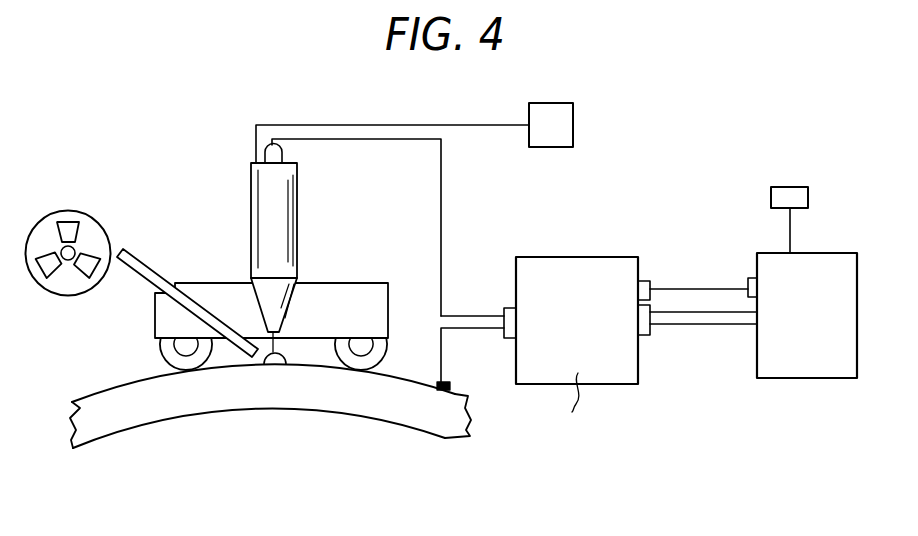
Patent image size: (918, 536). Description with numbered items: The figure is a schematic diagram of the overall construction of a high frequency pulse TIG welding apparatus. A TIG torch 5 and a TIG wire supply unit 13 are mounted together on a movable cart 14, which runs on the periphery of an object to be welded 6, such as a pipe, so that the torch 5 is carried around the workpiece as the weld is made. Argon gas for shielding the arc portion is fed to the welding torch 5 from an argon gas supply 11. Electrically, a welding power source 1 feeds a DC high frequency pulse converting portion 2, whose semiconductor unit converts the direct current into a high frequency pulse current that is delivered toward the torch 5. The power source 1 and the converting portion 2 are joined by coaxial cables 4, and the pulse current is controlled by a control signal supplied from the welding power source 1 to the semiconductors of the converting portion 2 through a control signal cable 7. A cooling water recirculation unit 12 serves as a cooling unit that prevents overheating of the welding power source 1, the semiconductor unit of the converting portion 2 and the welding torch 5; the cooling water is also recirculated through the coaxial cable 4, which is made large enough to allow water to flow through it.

The welding power source 1 is at (757, 378).
The DC high frequency pulse converting portion 2 is at (596, 257).
The coaxial cable 4 is at (483, 328).
The TIG torch 5 is at (251, 184).
The object to be welded 6 is at (263, 411).
The control signal cable 7 is at (698, 288).
The argon gas supply 11 is at (551, 103).
The cooling water recirculation unit 12 is at (806, 187).
The TIG wire supply unit 13 is at (88, 212).
The movable cart 14 is at (334, 283).